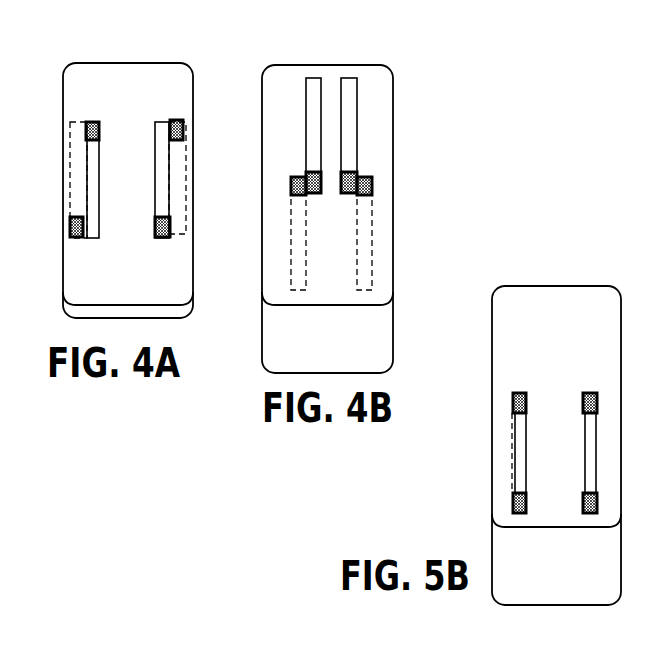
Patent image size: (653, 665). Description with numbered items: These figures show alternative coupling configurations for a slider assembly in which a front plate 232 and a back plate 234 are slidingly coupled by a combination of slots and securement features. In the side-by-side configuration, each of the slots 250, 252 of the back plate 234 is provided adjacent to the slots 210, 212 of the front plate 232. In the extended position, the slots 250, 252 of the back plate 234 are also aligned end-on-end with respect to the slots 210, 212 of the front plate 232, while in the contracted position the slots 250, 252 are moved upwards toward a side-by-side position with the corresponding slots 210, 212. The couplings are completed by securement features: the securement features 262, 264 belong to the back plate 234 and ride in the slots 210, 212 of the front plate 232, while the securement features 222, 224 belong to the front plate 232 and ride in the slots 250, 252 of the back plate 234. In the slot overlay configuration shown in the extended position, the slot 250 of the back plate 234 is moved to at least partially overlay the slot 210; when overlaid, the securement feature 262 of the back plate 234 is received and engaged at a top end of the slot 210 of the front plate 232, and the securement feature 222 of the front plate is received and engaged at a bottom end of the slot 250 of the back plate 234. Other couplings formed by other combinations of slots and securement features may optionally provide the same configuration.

In FIG. 4A, the slot of the front plate 210 is at (99, 165).
In FIG. 4B, the slot of the front plate 210 is at (306, 105).
In FIG. 5B, the slot of the front plate 210 is at (514, 432).
In FIG. 4A, the slot of the front plate 212 is at (163, 122).
In FIG. 4B, the slot of the front plate 212 is at (357, 108).
In FIG. 4A, the securement feature 222 is at (72, 220).
In FIG. 4B, the securement feature 222 is at (291, 187).
In FIG. 5B, the securement feature 222 is at (514, 500).
In FIG. 4A, the securement feature 224 is at (163, 237).
In FIG. 4B, the securement feature 224 is at (372, 185).
In FIG. 4A, the front plate 232 is at (148, 63).
In FIG. 4B, the front plate 232 is at (305, 65).
In FIG. 5B, the front plate 232 is at (553, 290).
In FIG. 4A, the back plate 234 is at (90, 318).
In FIG. 4B, the back plate 234 is at (393, 348).
In FIG. 5B, the back plate 234 is at (555, 605).
In FIG. 4A, the slot of the back plate 250 is at (77, 163).
In FIG. 4B, the slot of the back plate 250 is at (292, 275).
In FIG. 5B, the slot of the back plate 250 is at (514, 455).
In FIG. 4A, the slot of the back plate 252 is at (186, 225).
In FIG. 4B, the slot of the back plate 252 is at (372, 253).
In FIG. 4A, the securement feature 262 is at (93, 122).
In FIG. 4B, the securement feature 262 is at (306, 175).
In FIG. 5B, the securement feature 262 is at (514, 401).
In FIG. 4A, the securement feature 264 is at (178, 120).
In FIG. 4B, the securement feature 264 is at (357, 173).